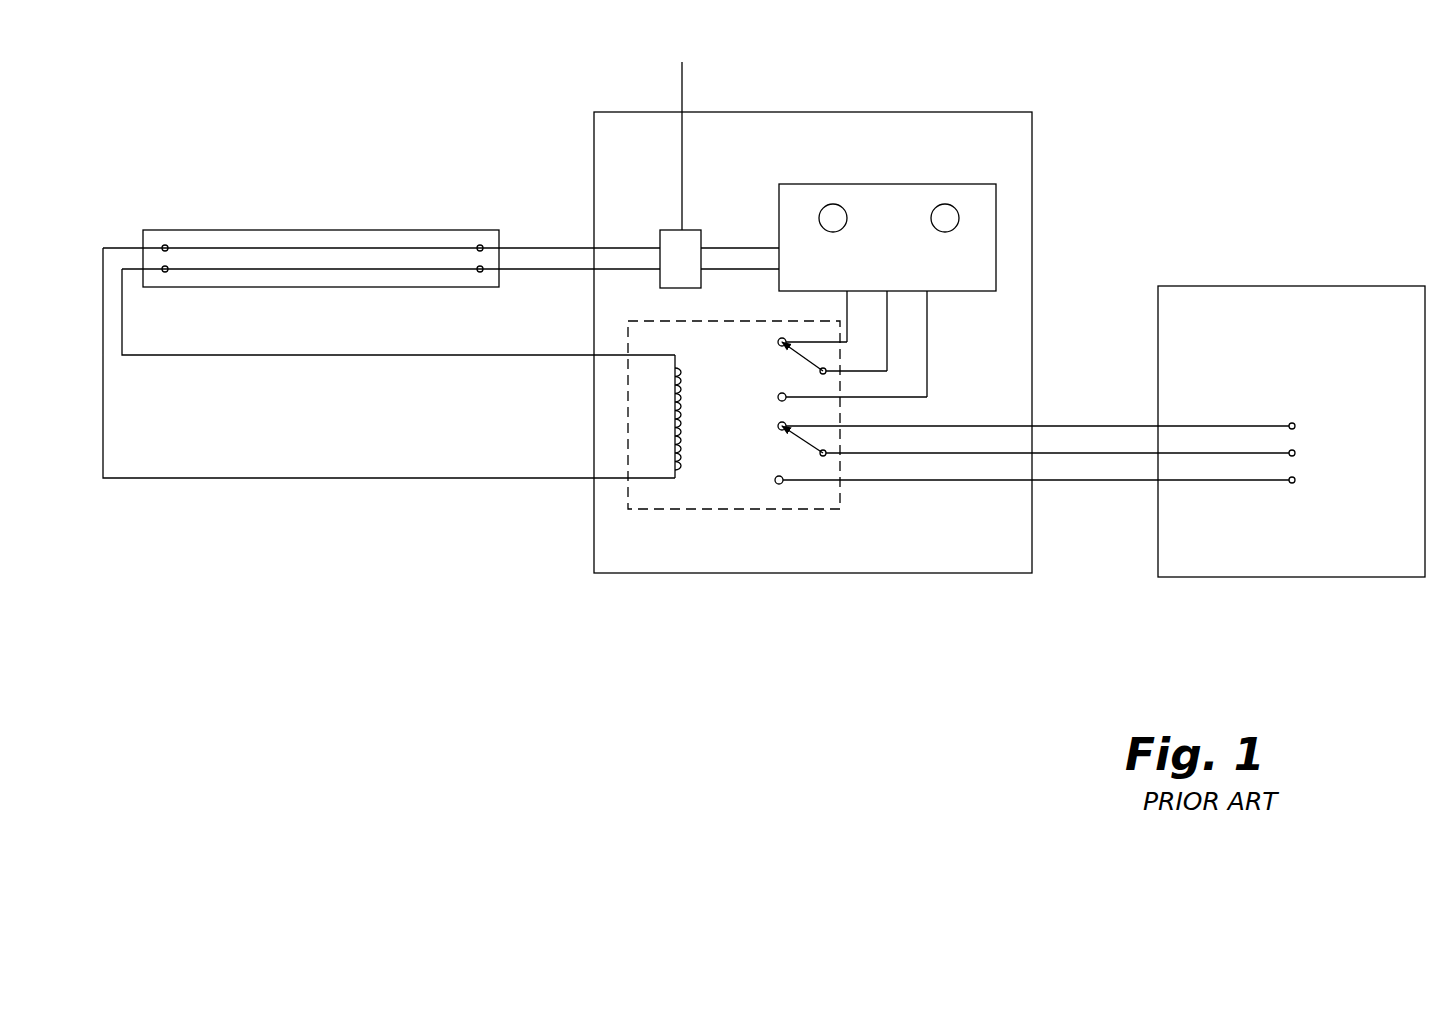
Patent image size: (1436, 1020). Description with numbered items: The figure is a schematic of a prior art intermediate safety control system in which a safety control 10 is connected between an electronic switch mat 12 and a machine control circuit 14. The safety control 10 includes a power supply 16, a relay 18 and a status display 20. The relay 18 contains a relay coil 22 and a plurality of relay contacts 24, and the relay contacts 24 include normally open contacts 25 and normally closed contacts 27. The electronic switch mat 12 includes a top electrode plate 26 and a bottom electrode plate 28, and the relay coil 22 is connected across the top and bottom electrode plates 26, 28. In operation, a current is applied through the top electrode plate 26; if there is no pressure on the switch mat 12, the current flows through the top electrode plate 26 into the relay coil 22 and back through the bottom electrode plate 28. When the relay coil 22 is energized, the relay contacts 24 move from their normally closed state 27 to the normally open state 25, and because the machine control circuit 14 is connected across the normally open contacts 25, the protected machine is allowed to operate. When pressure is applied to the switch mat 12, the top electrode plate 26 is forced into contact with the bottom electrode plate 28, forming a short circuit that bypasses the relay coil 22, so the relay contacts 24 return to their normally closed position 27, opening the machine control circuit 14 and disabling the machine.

The safety control 10 is at (818, 122).
The electronic switch mat 12 is at (209, 225).
The machine control circuit 14 is at (1300, 298).
The power supply 16 is at (719, 163).
The relay 18 is at (751, 318).
The status display 20 is at (862, 184).
The relay coil 22 is at (672, 424).
The relay contacts 24 is at (752, 414).
The normally open contacts 25 is at (778, 395).
The top electrode plate 26 is at (448, 247).
The normally closed contacts 27 is at (778, 342).
The bottom electrode plate 28 is at (440, 270).